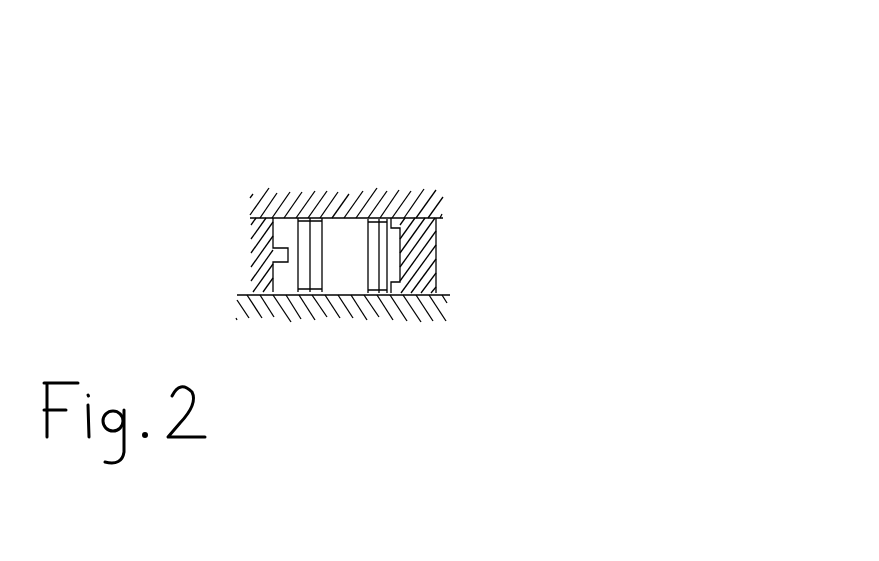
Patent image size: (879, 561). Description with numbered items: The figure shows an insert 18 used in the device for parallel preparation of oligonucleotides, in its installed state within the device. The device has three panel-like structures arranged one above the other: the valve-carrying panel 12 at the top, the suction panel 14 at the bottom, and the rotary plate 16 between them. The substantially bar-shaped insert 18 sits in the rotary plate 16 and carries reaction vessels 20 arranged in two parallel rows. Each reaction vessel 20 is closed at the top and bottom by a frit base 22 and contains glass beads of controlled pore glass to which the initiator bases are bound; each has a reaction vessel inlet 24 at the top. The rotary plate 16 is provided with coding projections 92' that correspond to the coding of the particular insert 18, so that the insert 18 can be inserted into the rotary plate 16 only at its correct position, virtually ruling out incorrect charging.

The valve-carrying panel 12 is at (403, 213).
The suction panel 14 is at (427, 303).
The rotary plate 16 is at (433, 263).
The insert 18 is at (337, 265).
The reaction vessel 20 is at (370, 258).
The frit base 22 is at (303, 220).
The coding projection 92' is at (388, 246).
The reaction vessel inlet 24 is at (482, 550).